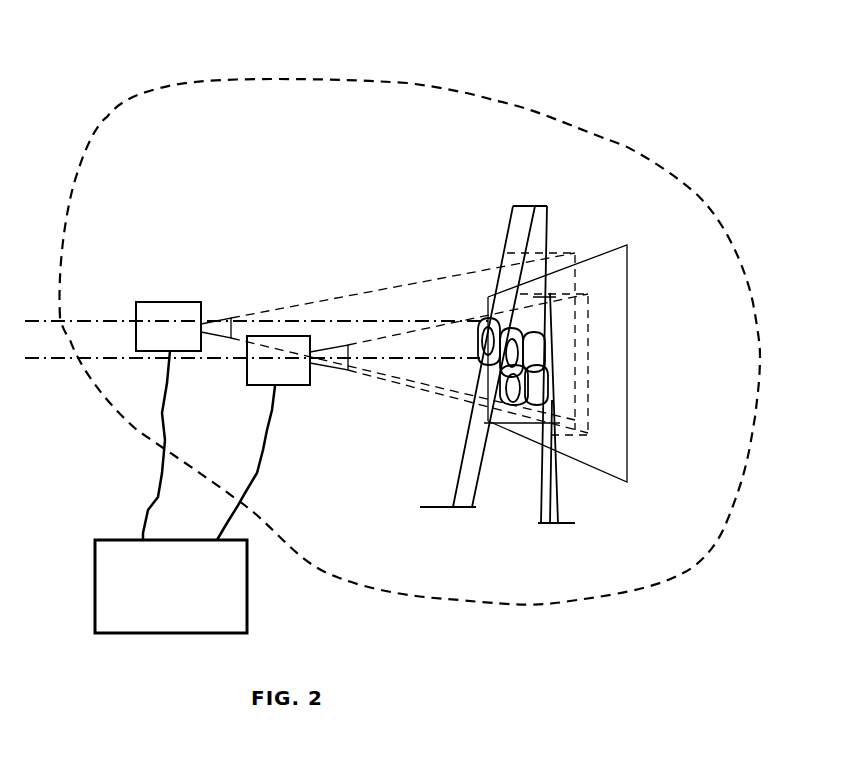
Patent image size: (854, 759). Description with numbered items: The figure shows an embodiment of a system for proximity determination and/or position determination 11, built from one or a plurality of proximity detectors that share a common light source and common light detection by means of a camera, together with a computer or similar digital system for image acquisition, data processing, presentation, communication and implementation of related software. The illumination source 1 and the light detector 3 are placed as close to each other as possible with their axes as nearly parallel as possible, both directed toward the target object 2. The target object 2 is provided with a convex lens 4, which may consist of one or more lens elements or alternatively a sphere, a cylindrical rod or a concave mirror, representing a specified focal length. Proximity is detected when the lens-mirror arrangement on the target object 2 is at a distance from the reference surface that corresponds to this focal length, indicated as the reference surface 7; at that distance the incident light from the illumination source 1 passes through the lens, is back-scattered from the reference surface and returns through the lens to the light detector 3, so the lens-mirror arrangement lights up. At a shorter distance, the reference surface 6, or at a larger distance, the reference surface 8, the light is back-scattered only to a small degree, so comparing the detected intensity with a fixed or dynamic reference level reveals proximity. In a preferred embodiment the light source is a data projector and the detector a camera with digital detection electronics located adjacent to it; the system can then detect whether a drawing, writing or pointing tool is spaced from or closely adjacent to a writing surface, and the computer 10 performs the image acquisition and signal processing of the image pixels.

The illumination source 1 is at (167, 313).
The target object 2 is at (478, 514).
The light detector 3 is at (290, 343).
The convex lens 4 is at (547, 206).
The reference surface at shorter distance 6 is at (563, 431).
The reference surface at specified focal length 7 is at (534, 352).
The reference surface at larger distance 8 is at (524, 385).
The computer / control unit 10 is at (185, 492).
The system for proximity determination and/or position determination 11 is at (420, 60).